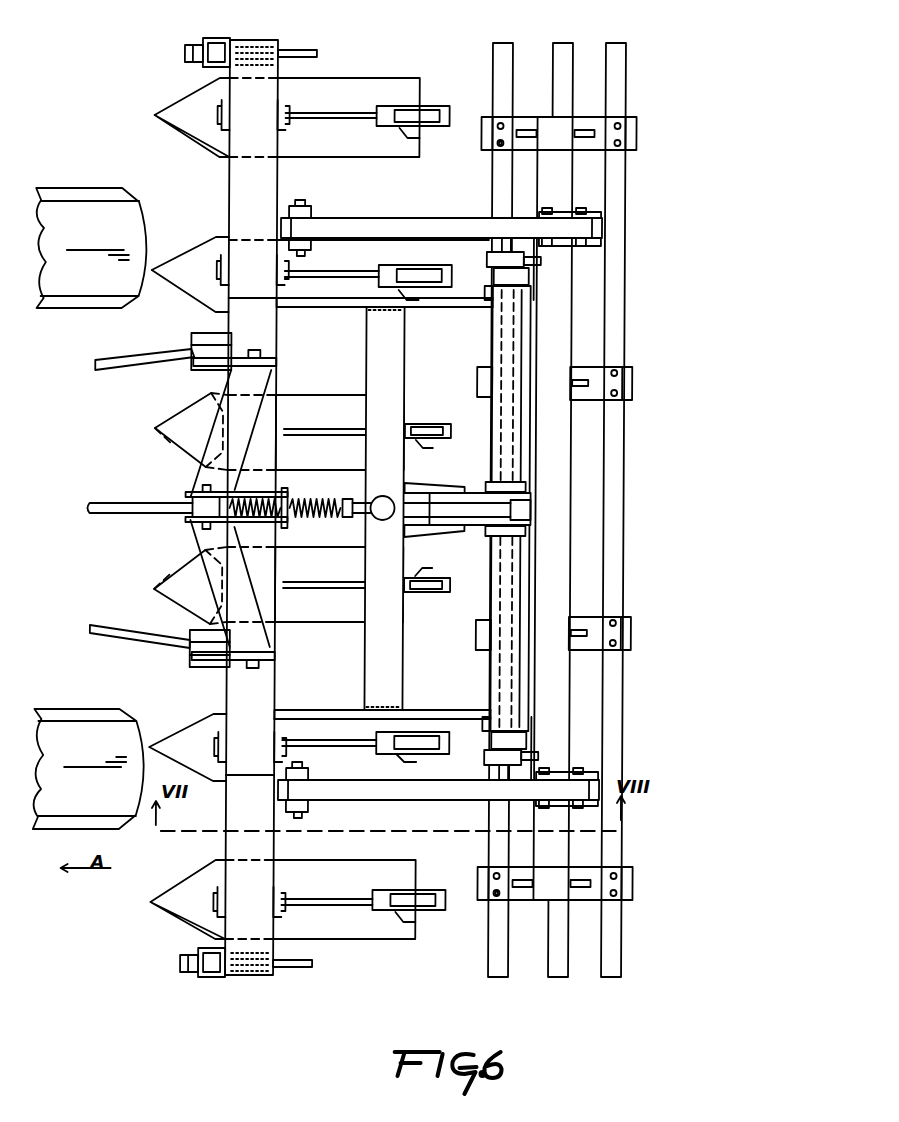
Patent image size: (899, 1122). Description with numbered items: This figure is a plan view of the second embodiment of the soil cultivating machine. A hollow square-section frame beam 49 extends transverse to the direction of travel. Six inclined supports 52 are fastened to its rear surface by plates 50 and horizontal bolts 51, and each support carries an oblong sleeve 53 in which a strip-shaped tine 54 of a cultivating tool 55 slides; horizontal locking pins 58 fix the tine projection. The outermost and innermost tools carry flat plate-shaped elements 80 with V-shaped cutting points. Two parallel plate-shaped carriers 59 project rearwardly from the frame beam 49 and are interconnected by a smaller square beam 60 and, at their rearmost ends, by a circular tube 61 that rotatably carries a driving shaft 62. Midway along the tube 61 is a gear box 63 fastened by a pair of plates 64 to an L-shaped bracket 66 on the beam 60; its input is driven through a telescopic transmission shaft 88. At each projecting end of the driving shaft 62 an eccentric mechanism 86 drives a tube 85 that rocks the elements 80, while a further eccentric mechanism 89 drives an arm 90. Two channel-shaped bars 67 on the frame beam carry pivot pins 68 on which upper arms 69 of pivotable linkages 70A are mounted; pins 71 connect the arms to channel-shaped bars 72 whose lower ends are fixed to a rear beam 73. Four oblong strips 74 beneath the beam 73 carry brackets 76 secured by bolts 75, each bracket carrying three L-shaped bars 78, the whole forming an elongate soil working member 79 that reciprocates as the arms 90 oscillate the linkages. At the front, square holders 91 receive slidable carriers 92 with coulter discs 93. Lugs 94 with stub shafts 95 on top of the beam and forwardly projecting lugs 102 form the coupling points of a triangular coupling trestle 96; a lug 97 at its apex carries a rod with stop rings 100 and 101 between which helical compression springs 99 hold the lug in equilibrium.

The frame beam 49 is at (240, 170).
The plates 50 is at (262, 112).
The bolts 51 is at (292, 120).
The supports 52 is at (360, 112).
The sleeve 53 is at (438, 108).
The tine 54 is at (405, 126).
The cultivating tool 55 is at (410, 70).
The locking pins 58 is at (425, 140).
The carriers 59 is at (335, 307).
The beam 60 is at (368, 450).
The tube 61 is at (528, 323).
The driving shaft 62 is at (488, 300).
The gear box 63 is at (485, 482).
The plates 64 is at (540, 522).
The bracket 66 is at (422, 485).
The bars 67 is at (305, 205).
The pivot pins 68 is at (306, 252).
The upper arm 69 is at (448, 222).
The pivotable linkages 70A is at (424, 214).
The pins 71 is at (575, 205).
The bars 72 is at (600, 225).
The beam 73 is at (560, 117).
The strips 74 is at (512, 117).
The bolts 75 is at (501, 150).
The brackets 76 is at (638, 128).
The bars 78 is at (555, 977).
The soil working member 79 is at (610, 117).
The plate-shaped elements 80 is at (368, 78).
The tube 85 is at (440, 718).
The eccentric mechanism 86 is at (532, 278).
The telescopic transmission shaft 88 is at (372, 497).
The further eccentric mechanisms 89 is at (505, 250).
The arms 90 is at (542, 258).
The holders 91 is at (212, 45).
The carriers 92 is at (220, 45).
The coulter discs 93 is at (305, 50).
The lugs 94 is at (278, 360).
The stub shafts 95 is at (268, 356).
The coupling member or trestle 96 is at (195, 455).
The lug 97 is at (292, 485).
The helical compression springs 99 is at (330, 522).
The stop ring 100 is at (221, 538).
The stop ring 101 is at (268, 430).
The lugs 102 is at (195, 360).